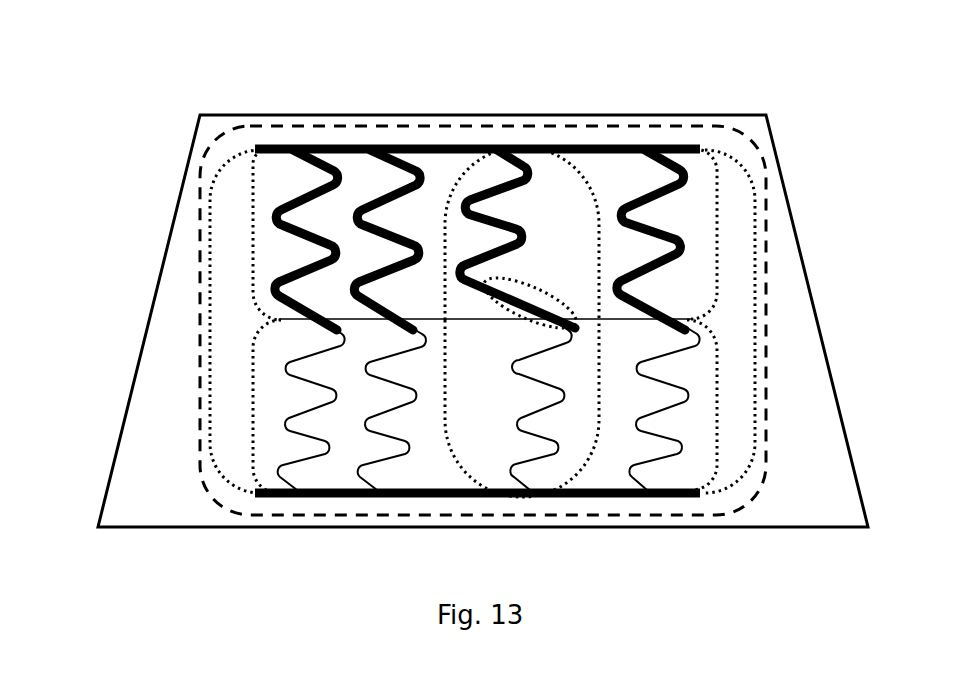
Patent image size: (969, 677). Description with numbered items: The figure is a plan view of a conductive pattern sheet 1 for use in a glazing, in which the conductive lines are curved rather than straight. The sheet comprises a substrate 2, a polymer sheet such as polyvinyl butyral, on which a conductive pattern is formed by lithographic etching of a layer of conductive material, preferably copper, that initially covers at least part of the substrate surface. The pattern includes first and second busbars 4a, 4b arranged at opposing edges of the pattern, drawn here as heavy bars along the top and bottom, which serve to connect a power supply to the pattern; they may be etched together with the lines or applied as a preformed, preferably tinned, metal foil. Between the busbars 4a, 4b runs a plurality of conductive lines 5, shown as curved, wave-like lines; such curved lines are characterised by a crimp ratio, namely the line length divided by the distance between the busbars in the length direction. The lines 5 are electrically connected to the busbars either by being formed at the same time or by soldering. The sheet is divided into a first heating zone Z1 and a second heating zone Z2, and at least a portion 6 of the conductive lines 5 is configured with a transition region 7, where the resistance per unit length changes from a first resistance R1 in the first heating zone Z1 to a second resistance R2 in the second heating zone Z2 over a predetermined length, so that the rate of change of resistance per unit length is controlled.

The conductive pattern sheet 1 is at (130, 56).
The substrate 2 is at (301, 106).
The first busbar 4a is at (239, 149).
The second busbar 4b is at (237, 492).
The plurality of conductive lines 5 is at (195, 321).
The portion of the plurality of conductive lines 6 is at (456, 164).
The transition region 7 is at (556, 288).
The first heating zone Z1 is at (239, 235).
The second heating zone Z2 is at (239, 408).
The resistance per unit length of line in first heating zone R1 is at (534, 148).
The resistance per unit length of line in second heating zone R2 is at (542, 466).